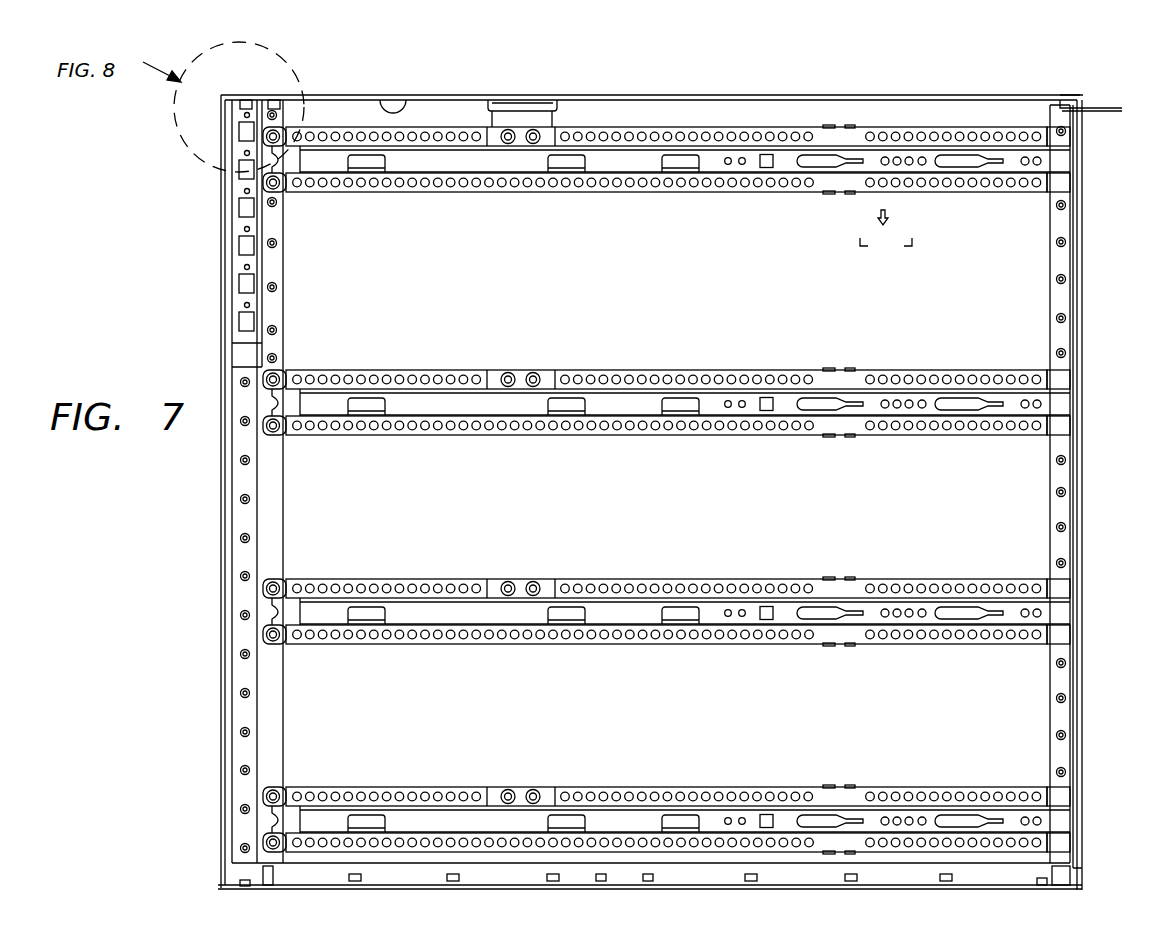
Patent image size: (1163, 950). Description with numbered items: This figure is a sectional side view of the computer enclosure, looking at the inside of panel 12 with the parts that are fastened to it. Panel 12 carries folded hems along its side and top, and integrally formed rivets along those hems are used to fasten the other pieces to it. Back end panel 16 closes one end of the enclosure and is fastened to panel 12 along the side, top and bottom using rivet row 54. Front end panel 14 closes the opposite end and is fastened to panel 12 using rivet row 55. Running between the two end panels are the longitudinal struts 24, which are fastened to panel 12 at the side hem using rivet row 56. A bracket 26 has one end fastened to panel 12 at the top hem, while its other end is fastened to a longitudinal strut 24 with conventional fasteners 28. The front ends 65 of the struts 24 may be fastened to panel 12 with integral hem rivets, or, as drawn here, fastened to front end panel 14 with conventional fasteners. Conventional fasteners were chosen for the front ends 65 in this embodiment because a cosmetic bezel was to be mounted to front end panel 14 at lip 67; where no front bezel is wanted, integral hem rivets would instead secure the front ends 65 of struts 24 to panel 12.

The panel 12 is at (745, 96).
The front end panel 14 is at (1085, 335).
The back end panel 16 is at (222, 628).
The longitudinal struts 24 is at (614, 195).
The bracket 26 is at (399, 108).
The conventional fasteners 28 is at (550, 118).
The rivet row 54 is at (252, 498).
The rivet row 55 is at (1056, 275).
The rivet row 56 is at (278, 328).
The front ends 65 is at (1065, 592).
The lip 67 is at (1100, 111).